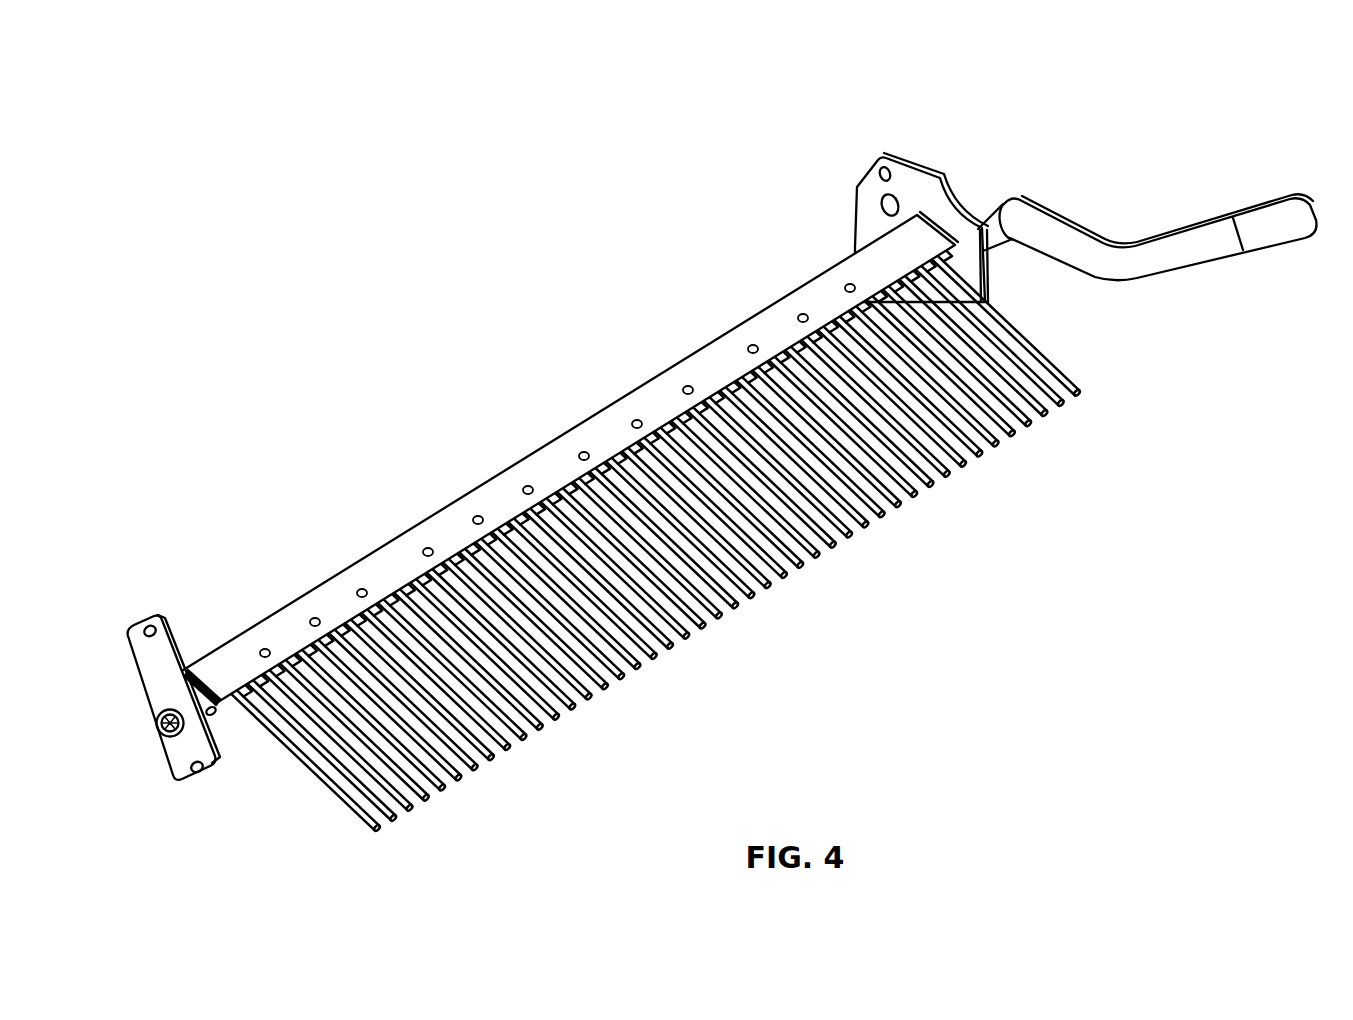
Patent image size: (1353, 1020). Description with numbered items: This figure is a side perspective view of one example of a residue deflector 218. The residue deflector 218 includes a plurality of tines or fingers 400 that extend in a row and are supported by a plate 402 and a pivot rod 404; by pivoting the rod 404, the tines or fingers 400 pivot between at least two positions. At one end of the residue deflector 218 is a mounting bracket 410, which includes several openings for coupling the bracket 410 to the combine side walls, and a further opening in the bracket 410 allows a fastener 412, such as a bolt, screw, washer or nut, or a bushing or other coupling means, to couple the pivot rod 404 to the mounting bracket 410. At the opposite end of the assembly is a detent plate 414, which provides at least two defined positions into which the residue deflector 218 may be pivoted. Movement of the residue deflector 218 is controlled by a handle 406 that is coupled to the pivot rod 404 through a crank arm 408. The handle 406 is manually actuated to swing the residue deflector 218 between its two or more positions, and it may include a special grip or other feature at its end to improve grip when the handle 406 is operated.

The residue deflector 218 is at (524, 318).
The tines or fingers 400 is at (655, 667).
The plate 402 is at (232, 660).
The pivot rod 404 is at (222, 714).
The handle 406 is at (1215, 240).
The crank arm 408 is at (993, 222).
The mounting bracket 410 is at (152, 664).
The fastener 412 is at (156, 729).
The detent plate 414 is at (920, 190).